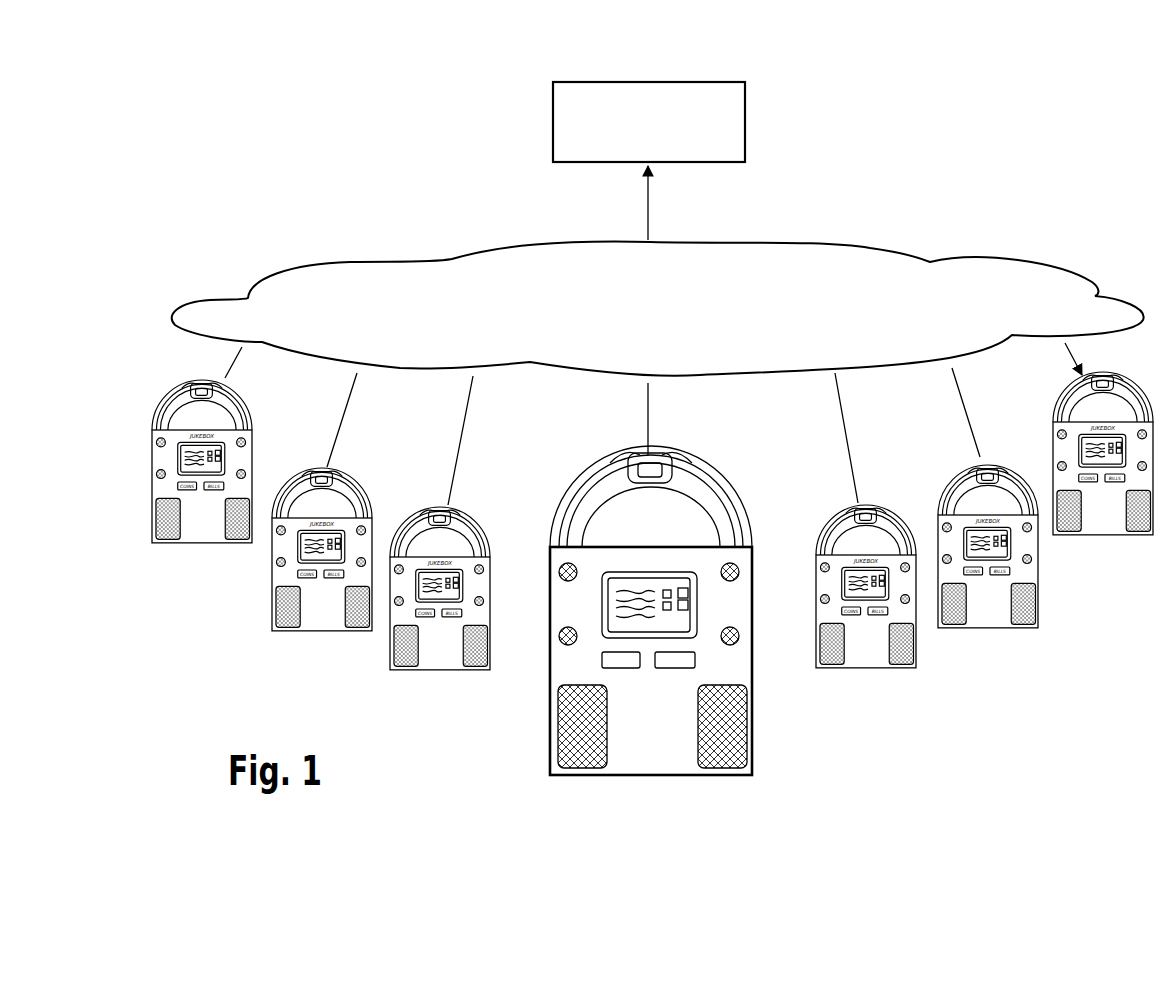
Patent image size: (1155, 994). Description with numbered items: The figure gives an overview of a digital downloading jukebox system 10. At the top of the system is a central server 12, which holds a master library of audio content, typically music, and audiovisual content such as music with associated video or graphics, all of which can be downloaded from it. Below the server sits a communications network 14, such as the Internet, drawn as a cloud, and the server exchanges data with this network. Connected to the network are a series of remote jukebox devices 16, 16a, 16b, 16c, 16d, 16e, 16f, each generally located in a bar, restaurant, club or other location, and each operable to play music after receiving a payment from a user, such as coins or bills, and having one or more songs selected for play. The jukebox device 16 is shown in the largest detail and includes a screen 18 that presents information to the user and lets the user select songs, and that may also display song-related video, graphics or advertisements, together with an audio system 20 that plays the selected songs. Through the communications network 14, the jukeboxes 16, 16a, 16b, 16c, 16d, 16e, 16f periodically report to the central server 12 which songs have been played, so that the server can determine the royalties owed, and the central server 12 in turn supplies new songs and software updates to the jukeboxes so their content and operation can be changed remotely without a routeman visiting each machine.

The jukebox system 10 is at (303, 210).
The central server 12 is at (737, 91).
The communications network 14 is at (860, 263).
The jukebox device 16 is at (658, 610).
The jukebox device 16a is at (865, 655).
The jukebox device 16b is at (985, 613).
The jukebox device 16c is at (1097, 523).
The jukebox device 16d is at (440, 675).
The jukebox device 16e is at (320, 620).
The jukebox device 16f is at (200, 533).
The screen 18 is at (701, 605).
The audio system 20 is at (555, 729).